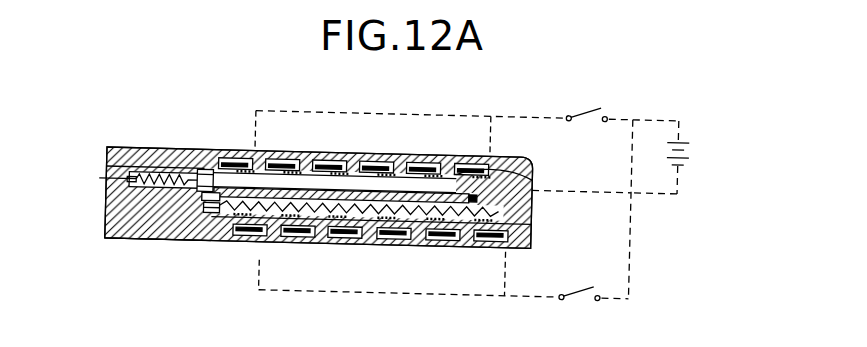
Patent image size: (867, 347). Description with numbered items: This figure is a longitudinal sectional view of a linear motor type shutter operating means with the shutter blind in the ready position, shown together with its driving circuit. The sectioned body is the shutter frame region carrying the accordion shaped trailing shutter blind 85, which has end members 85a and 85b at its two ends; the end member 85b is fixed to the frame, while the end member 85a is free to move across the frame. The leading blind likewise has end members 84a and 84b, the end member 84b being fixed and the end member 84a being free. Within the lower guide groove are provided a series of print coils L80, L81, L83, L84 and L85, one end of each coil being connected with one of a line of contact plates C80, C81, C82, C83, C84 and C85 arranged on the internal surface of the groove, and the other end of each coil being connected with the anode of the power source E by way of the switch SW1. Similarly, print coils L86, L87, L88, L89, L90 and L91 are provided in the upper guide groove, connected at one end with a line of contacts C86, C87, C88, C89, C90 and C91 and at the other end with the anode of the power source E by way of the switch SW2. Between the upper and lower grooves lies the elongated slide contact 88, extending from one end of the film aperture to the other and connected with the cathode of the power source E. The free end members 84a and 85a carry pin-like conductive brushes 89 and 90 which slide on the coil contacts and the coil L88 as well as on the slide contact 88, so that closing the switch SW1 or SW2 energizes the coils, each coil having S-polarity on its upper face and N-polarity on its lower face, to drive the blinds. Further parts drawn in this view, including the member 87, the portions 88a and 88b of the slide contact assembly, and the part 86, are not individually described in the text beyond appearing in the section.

The shutter blind 85 is at (130, 160).
The end member 85a is at (180, 165).
The end member 85b is at (100, 178).
The slider coupling piece 87 is at (205, 166).
The slide contact 88 is at (533, 163).
The slider contact bar 88a is at (507, 201).
The slider end block 88b is at (500, 165).
The end member 84a is at (158, 225).
The end member 84b is at (512, 226).
The contact piece 86 is at (213, 212).
The conductive brush 89 is at (203, 214).
The conductive brush 90 is at (166, 194).
The print coil L80 is at (250, 233).
The print coil L81 is at (290, 233).
The print coil L83 is at (386, 233).
The print coil L84 is at (435, 233).
The print coil L85 is at (483, 233).
The print coil L86 is at (240, 158).
The print coil L87 is at (285, 158).
The print coil L88 is at (330, 158).
The print coil L89 is at (377, 158).
The print coil L90 is at (423, 158).
The print coil L91 is at (468, 158).
The contact plate C80 is at (240, 228).
The contact plate C81 is at (270, 238).
The contact plate C82 is at (305, 238).
The contact plate C83 is at (350, 238).
The contact plate C84 is at (405, 238).
The contact plate C85 is at (455, 238).
The contact C86 is at (232, 160).
The contact C87 is at (268, 160).
The contact C88 is at (318, 160).
The contact C89 is at (365, 160).
The contact C90 is at (412, 160).
The contact C91 is at (460, 160).
The switch SW1 is at (586, 290).
The switch SW2 is at (588, 102).
The power source E is at (695, 137).